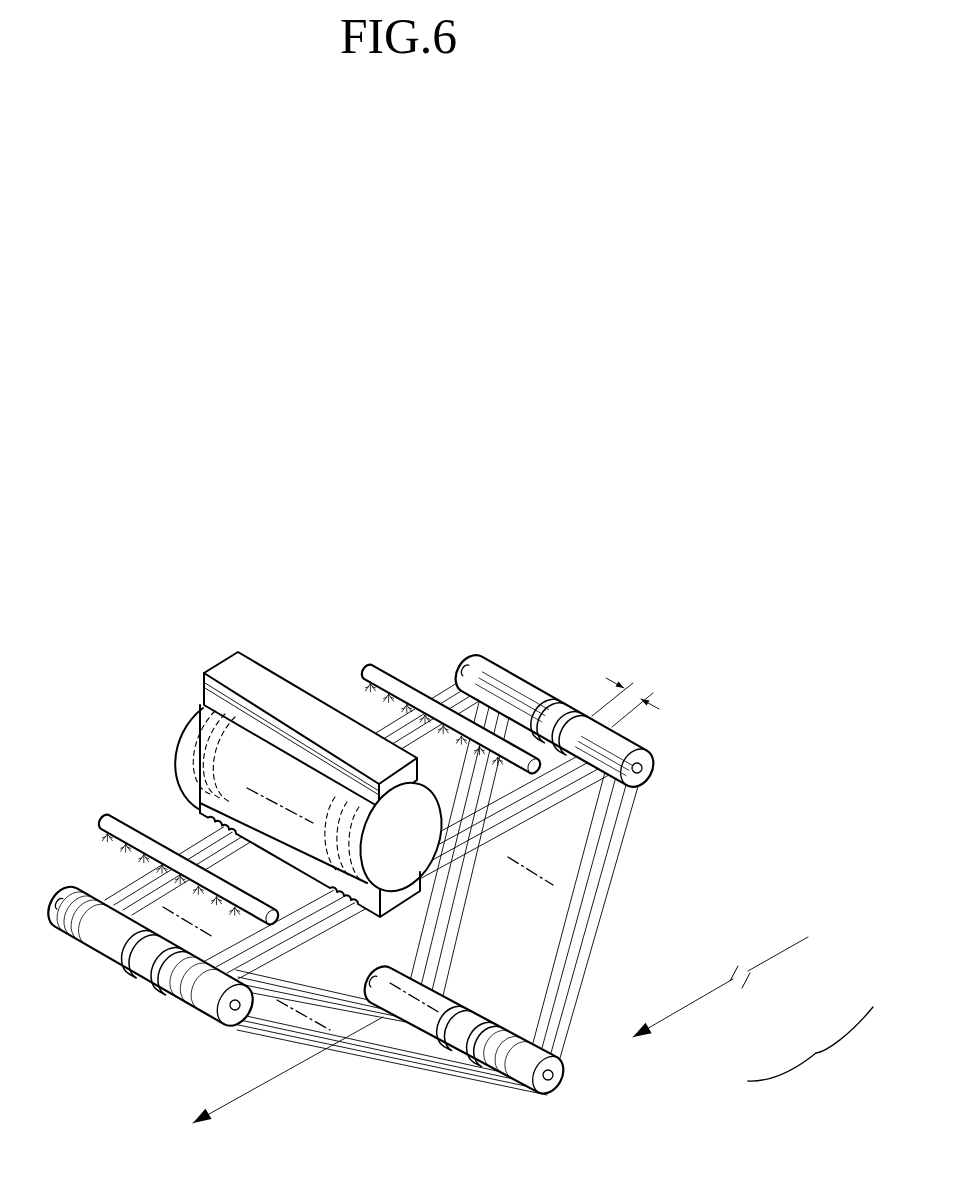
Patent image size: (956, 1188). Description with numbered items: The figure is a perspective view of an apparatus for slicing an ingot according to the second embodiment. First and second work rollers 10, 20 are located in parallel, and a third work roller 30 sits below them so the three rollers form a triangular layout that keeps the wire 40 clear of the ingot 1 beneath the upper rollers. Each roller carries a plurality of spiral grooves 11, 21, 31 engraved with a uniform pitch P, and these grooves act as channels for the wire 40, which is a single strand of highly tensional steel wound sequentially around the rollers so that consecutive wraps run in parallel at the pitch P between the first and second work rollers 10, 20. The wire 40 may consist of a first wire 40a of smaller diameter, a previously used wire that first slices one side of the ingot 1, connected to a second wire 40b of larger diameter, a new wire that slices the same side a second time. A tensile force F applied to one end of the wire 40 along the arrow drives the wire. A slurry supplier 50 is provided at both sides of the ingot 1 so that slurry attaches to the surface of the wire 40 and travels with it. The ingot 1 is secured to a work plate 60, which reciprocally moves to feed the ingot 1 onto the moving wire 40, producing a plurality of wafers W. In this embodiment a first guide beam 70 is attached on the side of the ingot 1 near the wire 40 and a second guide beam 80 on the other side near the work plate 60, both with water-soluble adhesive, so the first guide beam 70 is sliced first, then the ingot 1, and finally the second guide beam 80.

The ingot 1 is at (390, 907).
The first work roller 10 is at (217, 1022).
The grooves 11 is at (134, 975).
The second work roller 20 is at (653, 753).
The grooves 21 is at (550, 703).
The third work roller 30 is at (547, 1097).
The grooves 31 is at (478, 1058).
The wire 40 is at (489, 885).
The first wire 40a is at (688, 1007).
The second wire 40b is at (785, 952).
The slurry supplier 50 is at (371, 667).
The work plate 60 is at (214, 664).
The first guide beam 70 is at (200, 807).
The second guide beam 80 is at (202, 692).
The wafers W is at (189, 729).
The pitch P is at (628, 693).
The tensile force F is at (272, 1082).